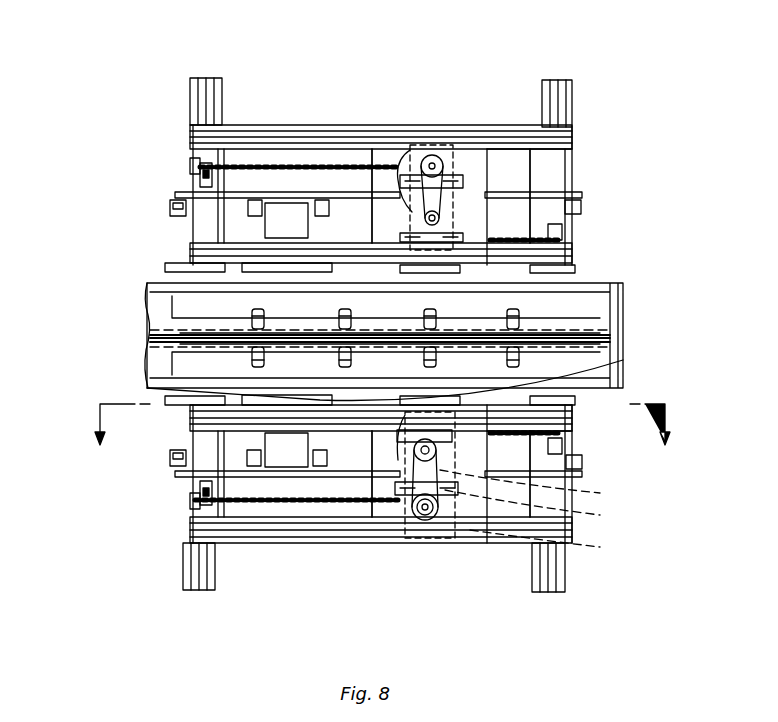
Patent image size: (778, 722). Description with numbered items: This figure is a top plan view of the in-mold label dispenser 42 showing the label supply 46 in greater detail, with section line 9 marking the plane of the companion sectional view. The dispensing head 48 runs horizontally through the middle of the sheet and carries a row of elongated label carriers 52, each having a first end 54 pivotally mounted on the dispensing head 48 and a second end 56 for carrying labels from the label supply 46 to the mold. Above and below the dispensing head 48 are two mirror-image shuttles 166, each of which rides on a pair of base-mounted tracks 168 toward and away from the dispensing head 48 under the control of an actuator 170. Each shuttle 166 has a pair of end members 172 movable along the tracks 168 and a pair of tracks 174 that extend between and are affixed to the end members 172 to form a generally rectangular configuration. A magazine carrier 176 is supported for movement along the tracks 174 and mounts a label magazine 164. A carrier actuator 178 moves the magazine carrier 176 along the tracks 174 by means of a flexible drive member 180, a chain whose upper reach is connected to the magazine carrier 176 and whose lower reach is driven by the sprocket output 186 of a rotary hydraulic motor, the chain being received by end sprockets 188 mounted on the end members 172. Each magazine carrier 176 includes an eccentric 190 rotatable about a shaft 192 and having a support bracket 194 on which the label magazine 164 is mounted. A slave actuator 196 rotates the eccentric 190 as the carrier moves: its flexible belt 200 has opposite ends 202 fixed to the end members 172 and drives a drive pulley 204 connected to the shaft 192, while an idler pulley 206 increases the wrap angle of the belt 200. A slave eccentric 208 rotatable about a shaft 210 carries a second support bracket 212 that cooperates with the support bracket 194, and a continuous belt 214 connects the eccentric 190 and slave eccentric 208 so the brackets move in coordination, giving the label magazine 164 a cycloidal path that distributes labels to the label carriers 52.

The section line 9- 9 is at (383, 428).
The in-mold label dispenser 42 is at (88, 541).
The label supply 46 is at (170, 492).
The dispensing head 48 is at (156, 283).
The label carrier 52 is at (248, 333).
The first end 54 is at (225, 318).
The second end 56 is at (360, 322).
The label magazine 164 is at (455, 165).
The shuttle 166 is at (236, 108).
The tracks 168 is at (192, 95).
The actuator 170 is at (372, 165).
The end members 172 is at (195, 155).
The tracks 174 is at (330, 125).
The magazine carrier 176 is at (455, 160).
The carrier actuator 178 is at (290, 170).
The flexible drive member 180 is at (177, 194).
The output 186 is at (200, 175).
The end sprockets 188 is at (275, 222).
The eccentric 190 is at (560, 145).
The shaft 192 is at (425, 150).
The support bracket 194 is at (610, 370).
The slave actuator 196 is at (372, 160).
The flexible belt 200 is at (290, 165).
The opposite ends 202 is at (192, 165).
The drive pulley 204 is at (545, 486).
The idler pulley 206 is at (547, 507).
The slave eccentric 208 is at (436, 157).
The shaft 210 is at (440, 175).
The support bracket 212 is at (458, 178).
The continuous belt 214 is at (412, 145).